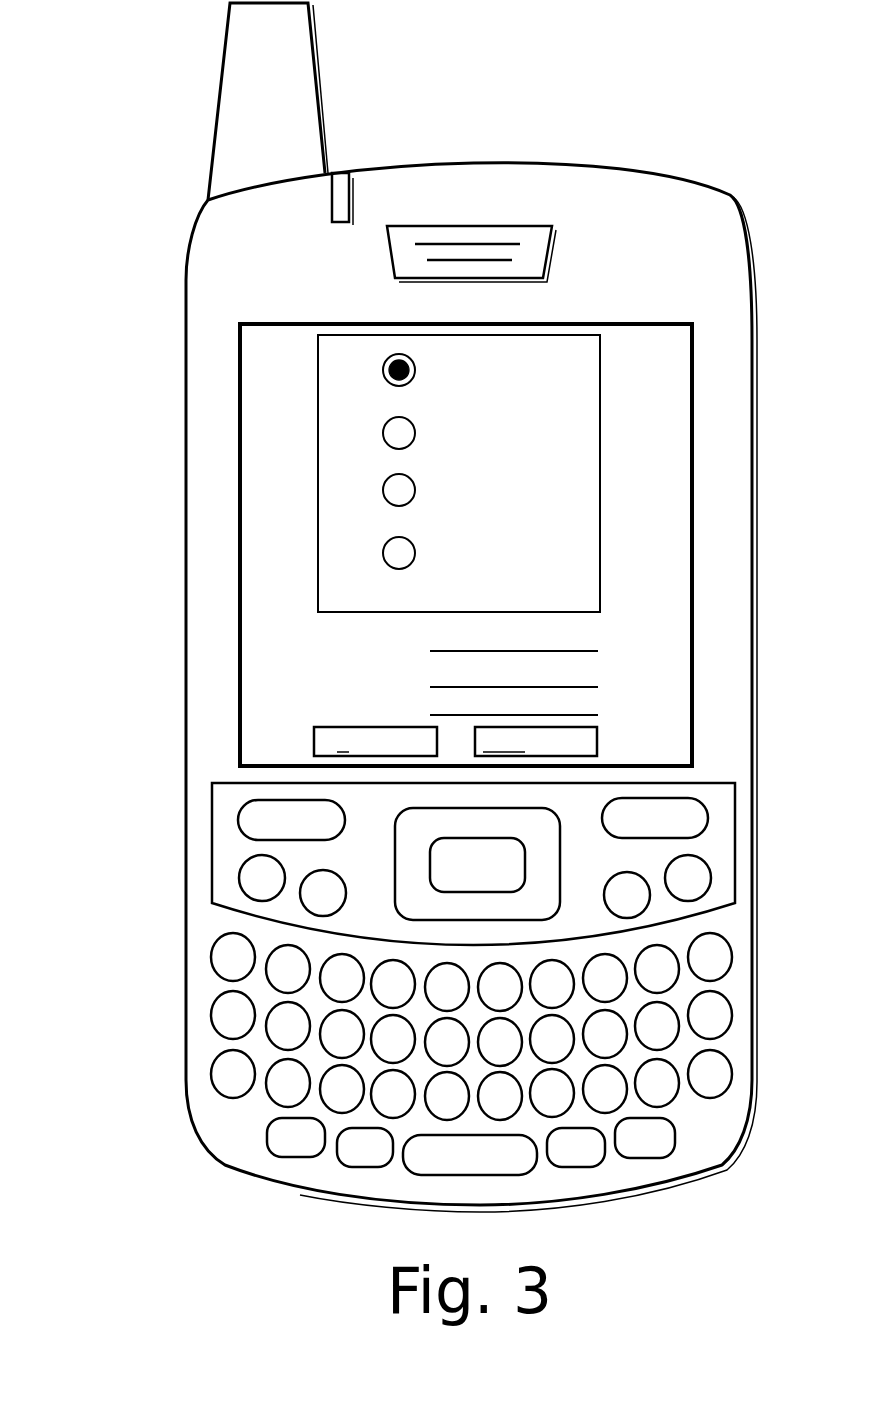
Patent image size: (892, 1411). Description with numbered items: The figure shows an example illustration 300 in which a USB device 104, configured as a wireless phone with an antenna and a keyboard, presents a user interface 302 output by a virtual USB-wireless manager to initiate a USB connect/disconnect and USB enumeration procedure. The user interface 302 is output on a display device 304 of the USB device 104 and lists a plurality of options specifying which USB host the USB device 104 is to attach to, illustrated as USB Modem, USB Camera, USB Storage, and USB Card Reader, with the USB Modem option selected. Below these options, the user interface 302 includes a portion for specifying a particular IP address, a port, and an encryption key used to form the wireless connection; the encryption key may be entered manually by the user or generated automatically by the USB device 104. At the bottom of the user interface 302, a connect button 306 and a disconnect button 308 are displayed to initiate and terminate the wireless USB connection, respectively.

The mobile device 300 is at (168, 66).
The USB device 104 is at (732, 194).
The user interface 302 is at (629, 278).
The display device 304 is at (300, 323).
The connect button 306 is at (313, 738).
The disconnect button 308 is at (598, 738).